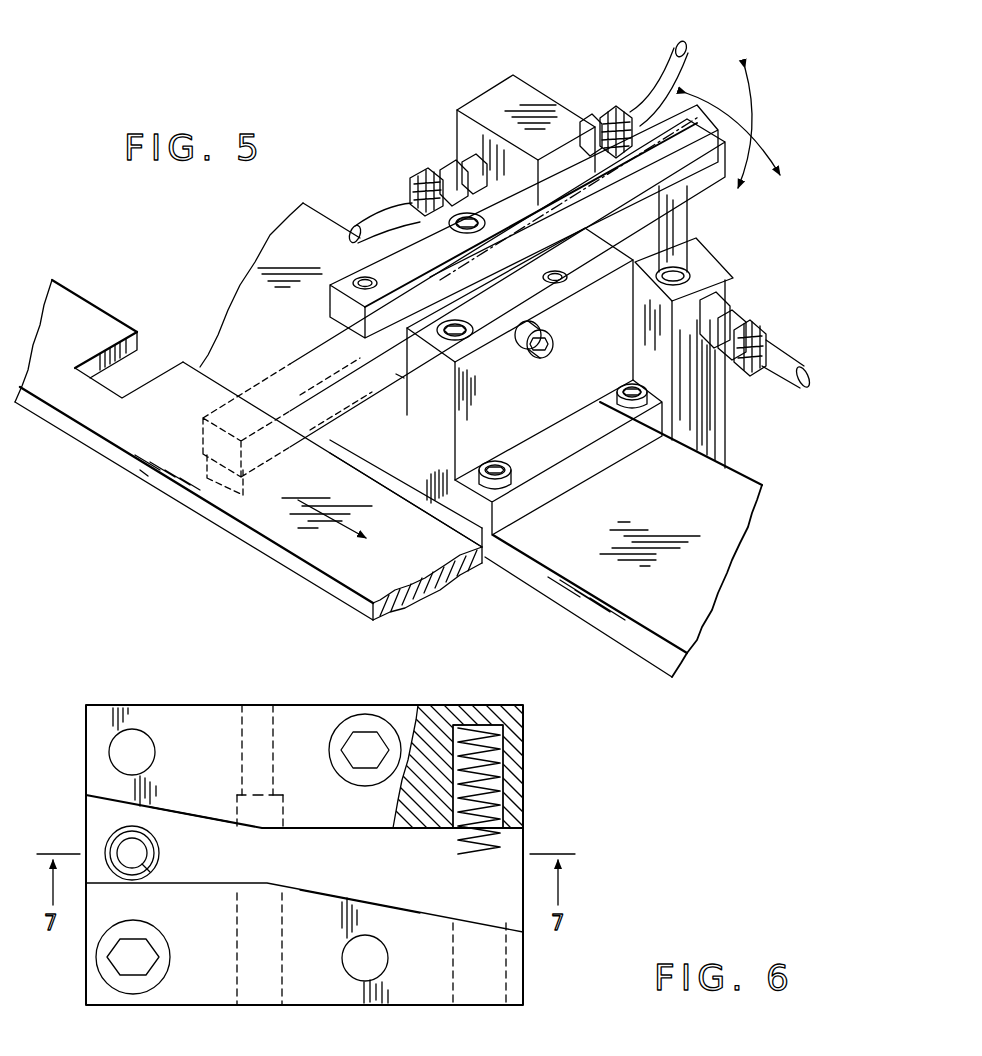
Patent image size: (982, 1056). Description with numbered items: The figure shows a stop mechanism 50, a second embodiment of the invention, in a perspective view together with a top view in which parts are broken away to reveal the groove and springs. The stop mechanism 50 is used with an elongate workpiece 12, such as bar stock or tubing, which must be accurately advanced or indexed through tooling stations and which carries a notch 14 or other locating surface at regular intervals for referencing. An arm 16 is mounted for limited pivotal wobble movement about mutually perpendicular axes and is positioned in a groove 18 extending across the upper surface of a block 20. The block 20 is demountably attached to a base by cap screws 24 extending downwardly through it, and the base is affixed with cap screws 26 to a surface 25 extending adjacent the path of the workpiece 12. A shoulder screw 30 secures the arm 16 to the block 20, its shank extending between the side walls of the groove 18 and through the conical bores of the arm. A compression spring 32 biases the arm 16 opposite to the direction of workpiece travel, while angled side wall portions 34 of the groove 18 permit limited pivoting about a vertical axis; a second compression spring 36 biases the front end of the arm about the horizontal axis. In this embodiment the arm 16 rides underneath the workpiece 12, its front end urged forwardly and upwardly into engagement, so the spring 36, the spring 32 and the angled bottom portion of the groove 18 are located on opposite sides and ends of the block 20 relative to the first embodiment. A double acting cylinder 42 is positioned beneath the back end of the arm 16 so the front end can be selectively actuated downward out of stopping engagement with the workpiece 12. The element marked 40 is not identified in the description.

In FIG. 5, the workpiece 12 is at (288, 522).
In FIG. 5, the notch 14 is at (112, 385).
In FIG. 5, the arm 16 is at (328, 373).
In FIG. 5, the groove 18 is at (407, 380).
In FIG. 6, the groove 18 is at (368, 868).
In FIG. 5, the block 20 is at (538, 417).
In FIG. 6, the block 20 is at (524, 781).
In FIG. 5, the cap screws 24 is at (458, 232).
In FIG. 6, the cap screws 24 is at (138, 953).
In FIG. 5, the surface 25 is at (728, 519).
In FIG. 5, the cap screws 26 is at (504, 464).
In FIG. 5, the shoulder screw 30 is at (553, 337).
In FIG. 6, the compression spring 32 is at (478, 852).
In FIG. 6, the side wall portions 34 is at (196, 818).
In FIG. 6, the compression spring 36 is at (115, 846).
In FIG. 5, the valve body 40 is at (533, 108).
In FIG. 5, the double acting cylinder 42 is at (700, 412).
In FIG. 5, the stop mechanism 50 is at (408, 146).